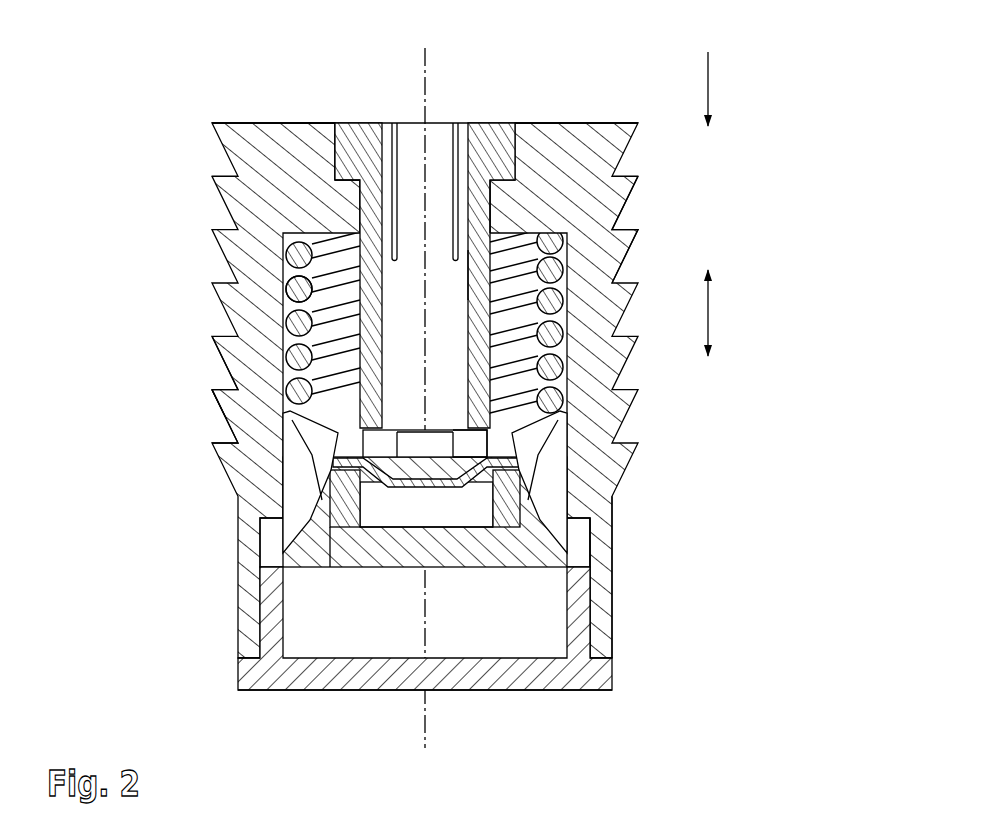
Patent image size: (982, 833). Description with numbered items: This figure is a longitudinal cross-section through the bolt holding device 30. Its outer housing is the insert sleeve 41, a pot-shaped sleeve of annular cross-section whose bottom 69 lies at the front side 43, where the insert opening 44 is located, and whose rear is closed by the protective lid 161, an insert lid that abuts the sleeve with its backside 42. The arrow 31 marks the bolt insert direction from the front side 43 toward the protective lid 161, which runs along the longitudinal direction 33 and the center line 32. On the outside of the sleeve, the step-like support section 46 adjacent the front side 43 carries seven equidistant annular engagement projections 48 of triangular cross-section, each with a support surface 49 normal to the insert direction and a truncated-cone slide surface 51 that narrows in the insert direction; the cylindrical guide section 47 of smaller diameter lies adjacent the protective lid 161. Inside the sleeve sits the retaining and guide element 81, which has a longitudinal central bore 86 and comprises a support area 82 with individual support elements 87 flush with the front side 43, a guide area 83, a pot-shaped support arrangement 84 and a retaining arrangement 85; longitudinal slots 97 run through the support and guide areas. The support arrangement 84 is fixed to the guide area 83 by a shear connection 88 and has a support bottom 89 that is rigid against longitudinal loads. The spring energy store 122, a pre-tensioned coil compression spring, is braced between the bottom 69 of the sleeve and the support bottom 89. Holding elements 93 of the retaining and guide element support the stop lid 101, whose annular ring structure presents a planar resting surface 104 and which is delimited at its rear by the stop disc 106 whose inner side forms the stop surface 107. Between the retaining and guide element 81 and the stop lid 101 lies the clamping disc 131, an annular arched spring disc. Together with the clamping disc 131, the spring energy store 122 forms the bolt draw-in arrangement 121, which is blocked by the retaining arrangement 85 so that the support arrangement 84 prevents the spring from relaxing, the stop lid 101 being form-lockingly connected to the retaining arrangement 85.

The bolt holding device 30 is at (596, 108).
The bolt insert direction 31 is at (712, 86).
The center line 32 is at (422, 385).
The longitudinal direction 33 is at (712, 312).
The insert sleeve 41 is at (270, 135).
The backside 42 is at (240, 659).
The front side 43 is at (311, 121).
The insert opening 44 is at (336, 124).
The support section 46 is at (643, 227).
The guide section 47 is at (619, 598).
The engagement projections 48 is at (221, 397).
The support surface 49 is at (230, 386).
The slide surface 51 is at (224, 417).
The bottom 69 is at (541, 162).
The retaining and guide element 81 is at (349, 201).
The support area 82 is at (366, 170).
The guide area 83 is at (370, 252).
The support arrangement 84 is at (497, 449).
The retaining arrangement 85 is at (275, 540).
The longitudinal central bore 86 is at (479, 217).
The support elements 87 is at (486, 140).
The shear connection 88 is at (502, 440).
The support bottom 89 is at (512, 458).
The holding elements 93 is at (528, 553).
The longitudinal slots 97 is at (461, 121).
The stop lid 101 is at (350, 543).
The resting surface 104 is at (545, 526).
The stop disc 106 is at (375, 542).
The stop surface 107 is at (396, 490).
The bolt draw-in arrangement 121 is at (280, 428).
The spring energy store 122 is at (300, 289).
The clamping disc 131 is at (550, 482).
The protective lid 161 is at (467, 671).